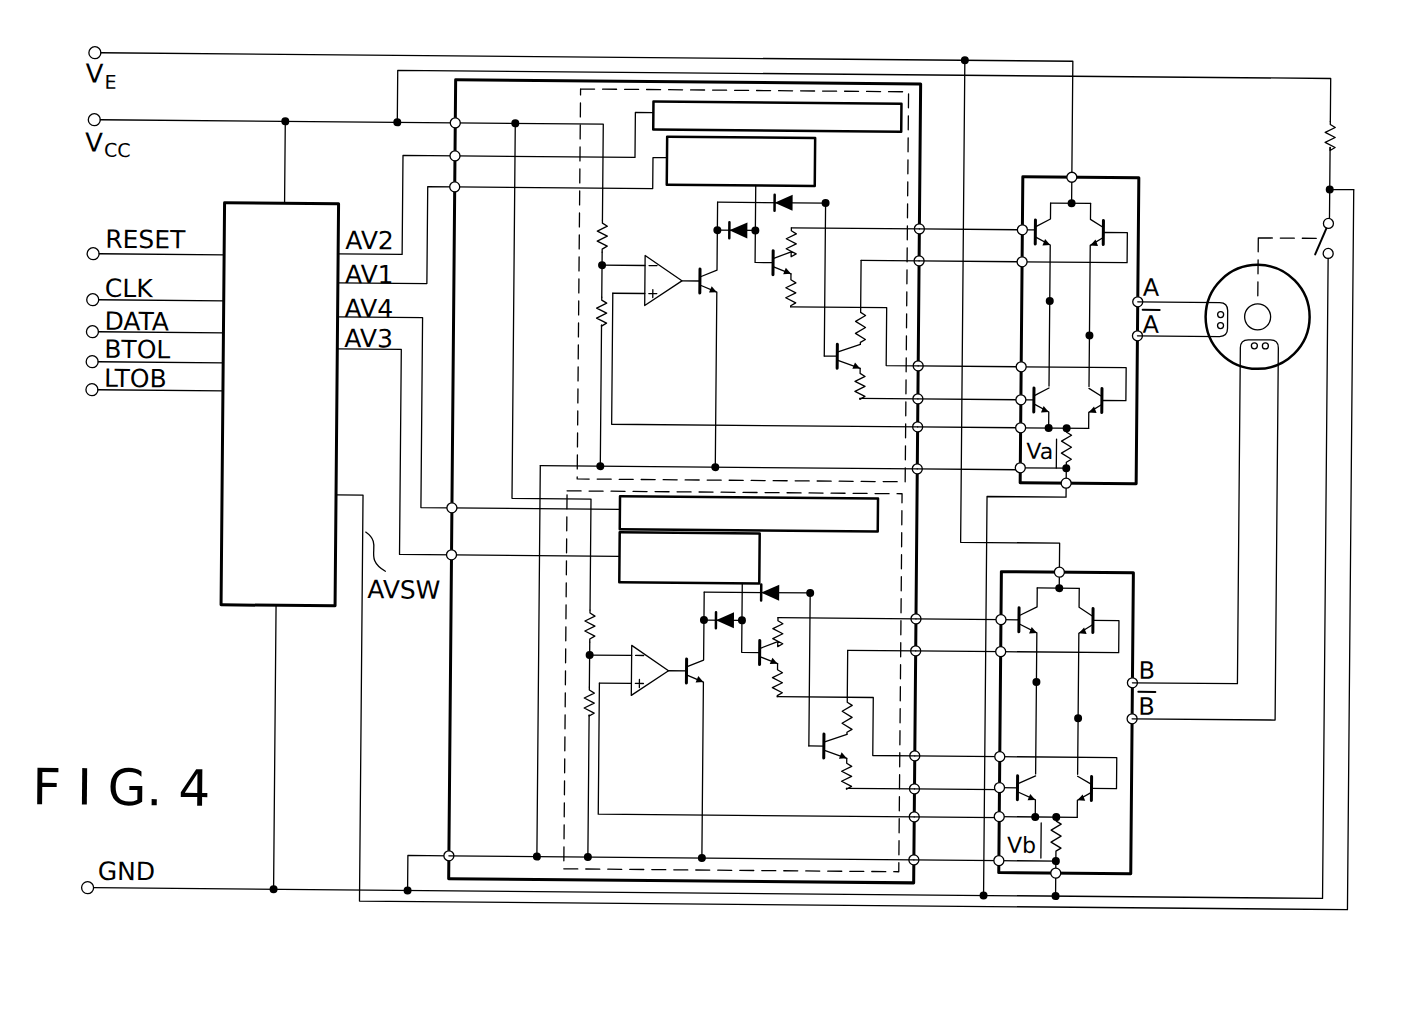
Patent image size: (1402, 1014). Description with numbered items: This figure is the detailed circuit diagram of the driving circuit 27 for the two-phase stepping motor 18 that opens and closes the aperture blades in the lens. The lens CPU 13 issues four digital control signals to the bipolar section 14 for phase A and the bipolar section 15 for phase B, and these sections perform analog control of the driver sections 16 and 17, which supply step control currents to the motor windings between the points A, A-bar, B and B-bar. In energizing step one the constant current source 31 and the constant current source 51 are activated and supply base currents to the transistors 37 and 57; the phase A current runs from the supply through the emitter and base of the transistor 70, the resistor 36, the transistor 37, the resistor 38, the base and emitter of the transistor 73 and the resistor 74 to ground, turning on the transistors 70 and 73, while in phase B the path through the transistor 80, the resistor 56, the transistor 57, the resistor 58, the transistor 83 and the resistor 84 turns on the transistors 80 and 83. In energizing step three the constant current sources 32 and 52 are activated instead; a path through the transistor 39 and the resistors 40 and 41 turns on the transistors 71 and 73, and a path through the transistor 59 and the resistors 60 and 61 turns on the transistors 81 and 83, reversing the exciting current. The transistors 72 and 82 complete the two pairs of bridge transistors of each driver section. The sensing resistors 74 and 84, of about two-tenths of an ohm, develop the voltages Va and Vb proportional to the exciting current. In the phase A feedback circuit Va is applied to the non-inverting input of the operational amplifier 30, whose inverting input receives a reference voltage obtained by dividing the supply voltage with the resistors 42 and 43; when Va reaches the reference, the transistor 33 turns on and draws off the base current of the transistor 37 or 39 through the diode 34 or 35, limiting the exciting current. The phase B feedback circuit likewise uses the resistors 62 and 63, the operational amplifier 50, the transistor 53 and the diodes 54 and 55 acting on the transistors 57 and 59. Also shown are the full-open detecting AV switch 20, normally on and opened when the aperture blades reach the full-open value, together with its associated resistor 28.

The lens CPU 13 is at (244, 609).
The bipolar section 14 is at (577, 383).
The bipolar section 15 is at (567, 596).
The driver section 16 is at (1138, 178).
The driver section 17 is at (1134, 571).
The stepping motor 18 is at (1212, 268).
The full-open detecting switch (AV switch) 20 is at (1332, 252).
The driving circuit 27 is at (452, 706).
The resistor 28 is at (1318, 130).
The operational amplifier 30 is at (664, 306).
The constant current source 31 is at (692, 186).
The constant current source 32 is at (848, 132).
The transistor 33 is at (722, 300).
The diode 34 is at (722, 236).
The diode 35 is at (828, 204).
The resistor 36 is at (800, 243).
The transistor 37 is at (772, 276).
The resistor 38 is at (790, 308).
The transistor 39 is at (834, 362).
The resistor 40 is at (862, 318).
The resistor 41 is at (857, 398).
The resistor 42 is at (605, 238).
The resistor 43 is at (598, 313).
The operational amplifier 50 is at (655, 697).
The constant current source 51 is at (650, 585).
The constant current source 52 is at (832, 532).
The transistor 53 is at (710, 690).
The diode 54 is at (712, 628).
The diode 55 is at (814, 594).
The resistor 56 is at (790, 633).
The transistor 57 is at (762, 666).
The resistor 58 is at (780, 698).
The transistor 59 is at (824, 752).
The resistor 60 is at (852, 708).
The resistor 61 is at (848, 788).
The resistor 62 is at (594, 616).
The resistor 63 is at (588, 704).
The transistor 70 is at (1040, 215).
The transistor 71 is at (1098, 212).
The transistor 72 is at (1066, 402).
The transistor 73 is at (1105, 412).
The resistor 74 is at (1075, 452).
The transistor 80 is at (1025, 605).
The transistor 81 is at (1098, 608).
The transistor 82 is at (1040, 790).
The transistor 83 is at (1102, 795).
The resistor 84 is at (1068, 848).